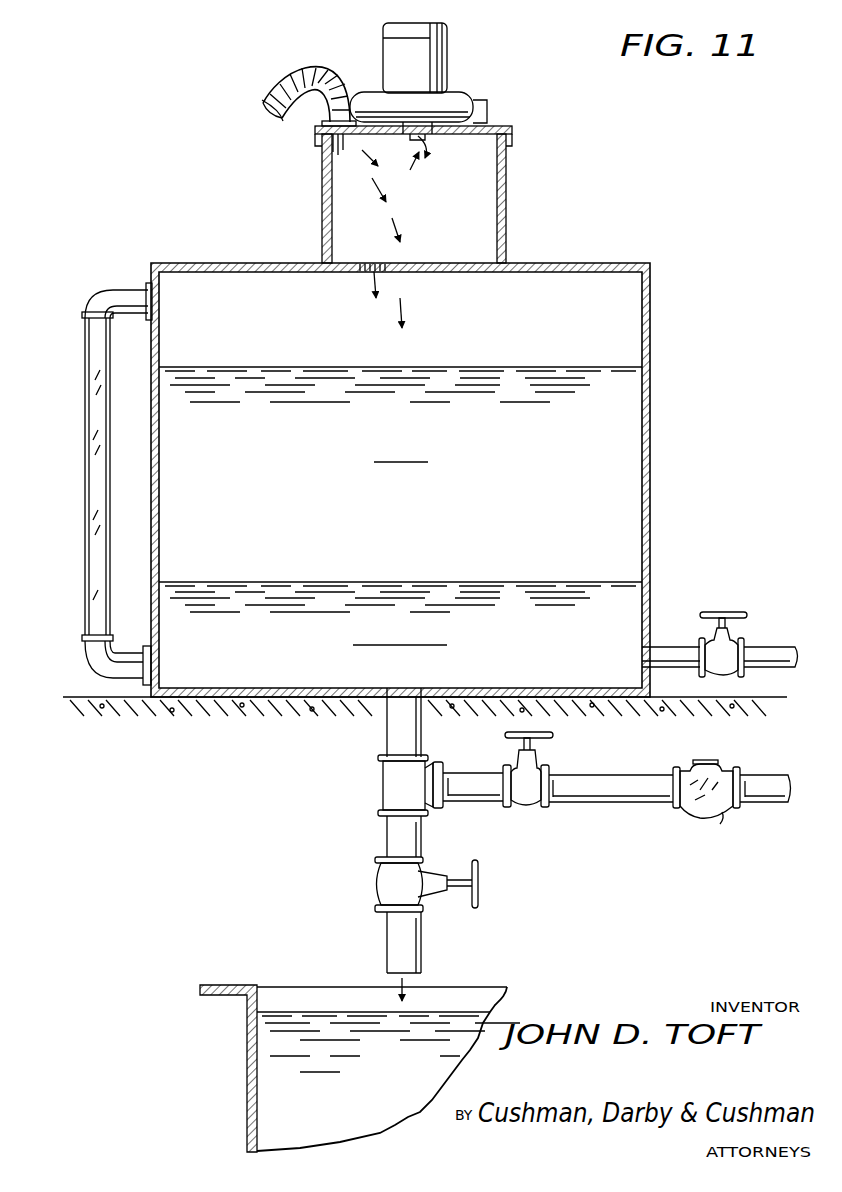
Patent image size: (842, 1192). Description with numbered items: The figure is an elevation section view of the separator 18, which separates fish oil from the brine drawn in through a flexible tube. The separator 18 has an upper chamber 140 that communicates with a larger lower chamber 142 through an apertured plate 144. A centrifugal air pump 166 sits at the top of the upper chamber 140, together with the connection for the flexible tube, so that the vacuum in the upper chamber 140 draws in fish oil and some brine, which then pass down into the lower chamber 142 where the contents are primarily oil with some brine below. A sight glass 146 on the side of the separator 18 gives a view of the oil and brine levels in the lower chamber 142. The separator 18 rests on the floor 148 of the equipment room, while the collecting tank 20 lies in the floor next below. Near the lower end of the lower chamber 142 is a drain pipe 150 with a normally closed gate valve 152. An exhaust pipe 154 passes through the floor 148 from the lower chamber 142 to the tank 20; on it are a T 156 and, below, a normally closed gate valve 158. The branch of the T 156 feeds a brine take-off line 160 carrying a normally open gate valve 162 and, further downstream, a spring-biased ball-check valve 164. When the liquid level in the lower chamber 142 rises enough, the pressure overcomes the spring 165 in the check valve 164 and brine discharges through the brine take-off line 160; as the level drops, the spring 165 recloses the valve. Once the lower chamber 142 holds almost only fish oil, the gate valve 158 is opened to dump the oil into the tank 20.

The separator 18 is at (522, 205).
The collecting tank 20 is at (247, 1092).
The upper chamber 140 is at (330, 210).
The lower chamber 142 is at (648, 308).
The apertured plate 144 is at (465, 272).
The sight glass 146 is at (85, 448).
The floor 148 is at (85, 697).
The drain pipe 150 is at (662, 646).
The gate valve 152 is at (724, 613).
The exhaust pipe 154 is at (385, 740).
The T 156 is at (382, 788).
The gate valve 158 is at (375, 882).
The brine take-off line 160 is at (487, 800).
The gate valve 162 is at (532, 768).
The spring-biased ball-check valve 164 is at (722, 768).
The spring 165 is at (743, 826).
The centrifugal air pump 166 is at (445, 85).